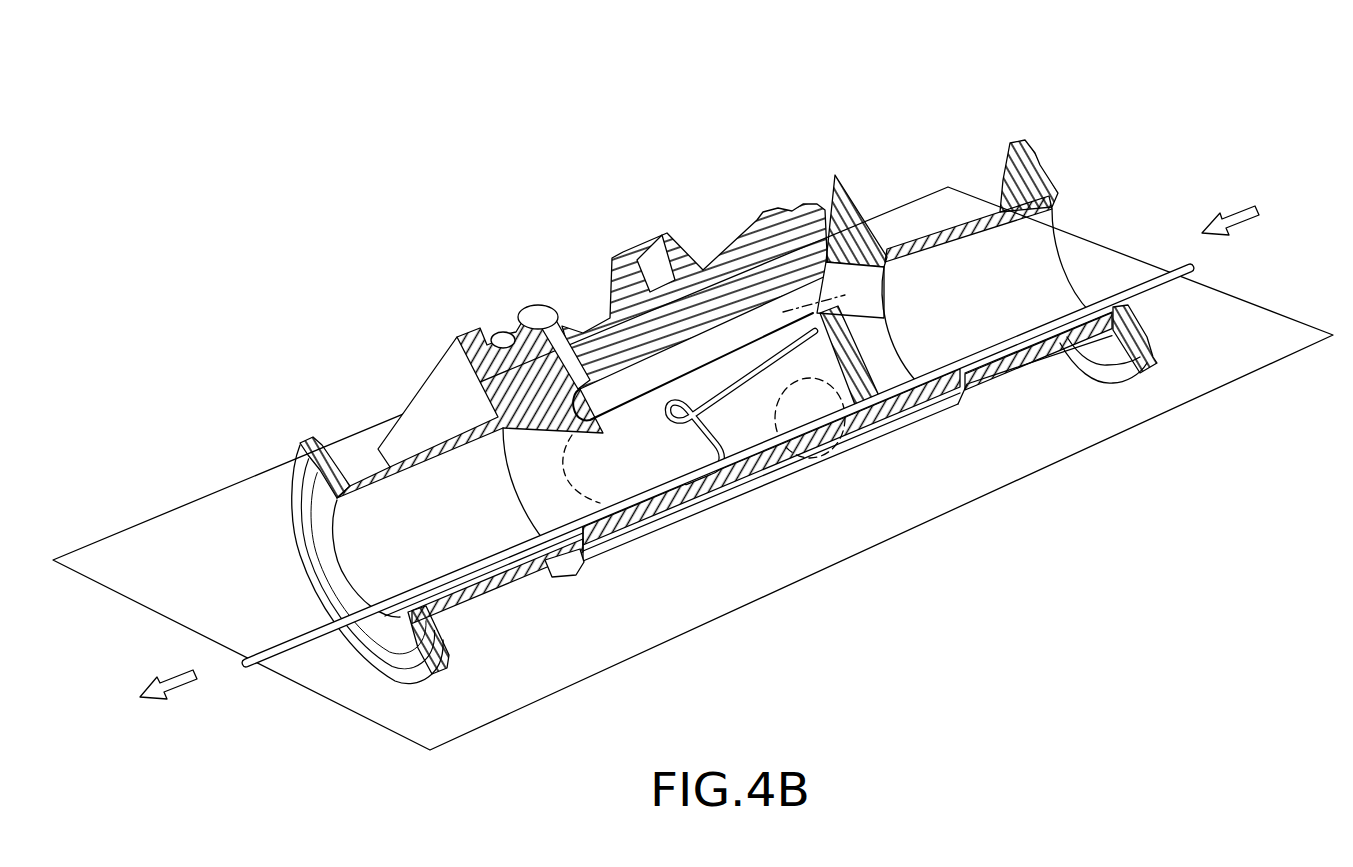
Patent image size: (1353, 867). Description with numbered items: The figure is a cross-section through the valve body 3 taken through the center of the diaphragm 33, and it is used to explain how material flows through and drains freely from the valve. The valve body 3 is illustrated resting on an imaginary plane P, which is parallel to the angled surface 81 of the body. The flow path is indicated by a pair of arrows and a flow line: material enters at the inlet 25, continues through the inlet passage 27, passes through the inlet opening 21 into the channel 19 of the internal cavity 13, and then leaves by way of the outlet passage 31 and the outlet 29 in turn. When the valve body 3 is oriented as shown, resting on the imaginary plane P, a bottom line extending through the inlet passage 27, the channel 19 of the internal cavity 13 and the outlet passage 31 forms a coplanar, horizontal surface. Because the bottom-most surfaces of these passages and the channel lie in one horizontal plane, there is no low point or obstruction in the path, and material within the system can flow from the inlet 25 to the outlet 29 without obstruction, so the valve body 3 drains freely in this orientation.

The valve body 3 is at (412, 405).
The internal cavity 13 is at (652, 404).
The channel 19 is at (802, 459).
The inlet opening 21 is at (870, 290).
The inlet 25 is at (1057, 247).
The inlet passage 27 is at (962, 310).
The outlet 29 is at (343, 553).
The outlet passage 31 is at (417, 534).
The diaphragm 33 is at (577, 327).
The angled surface 81 is at (563, 577).
The imaginary plane P is at (748, 605).